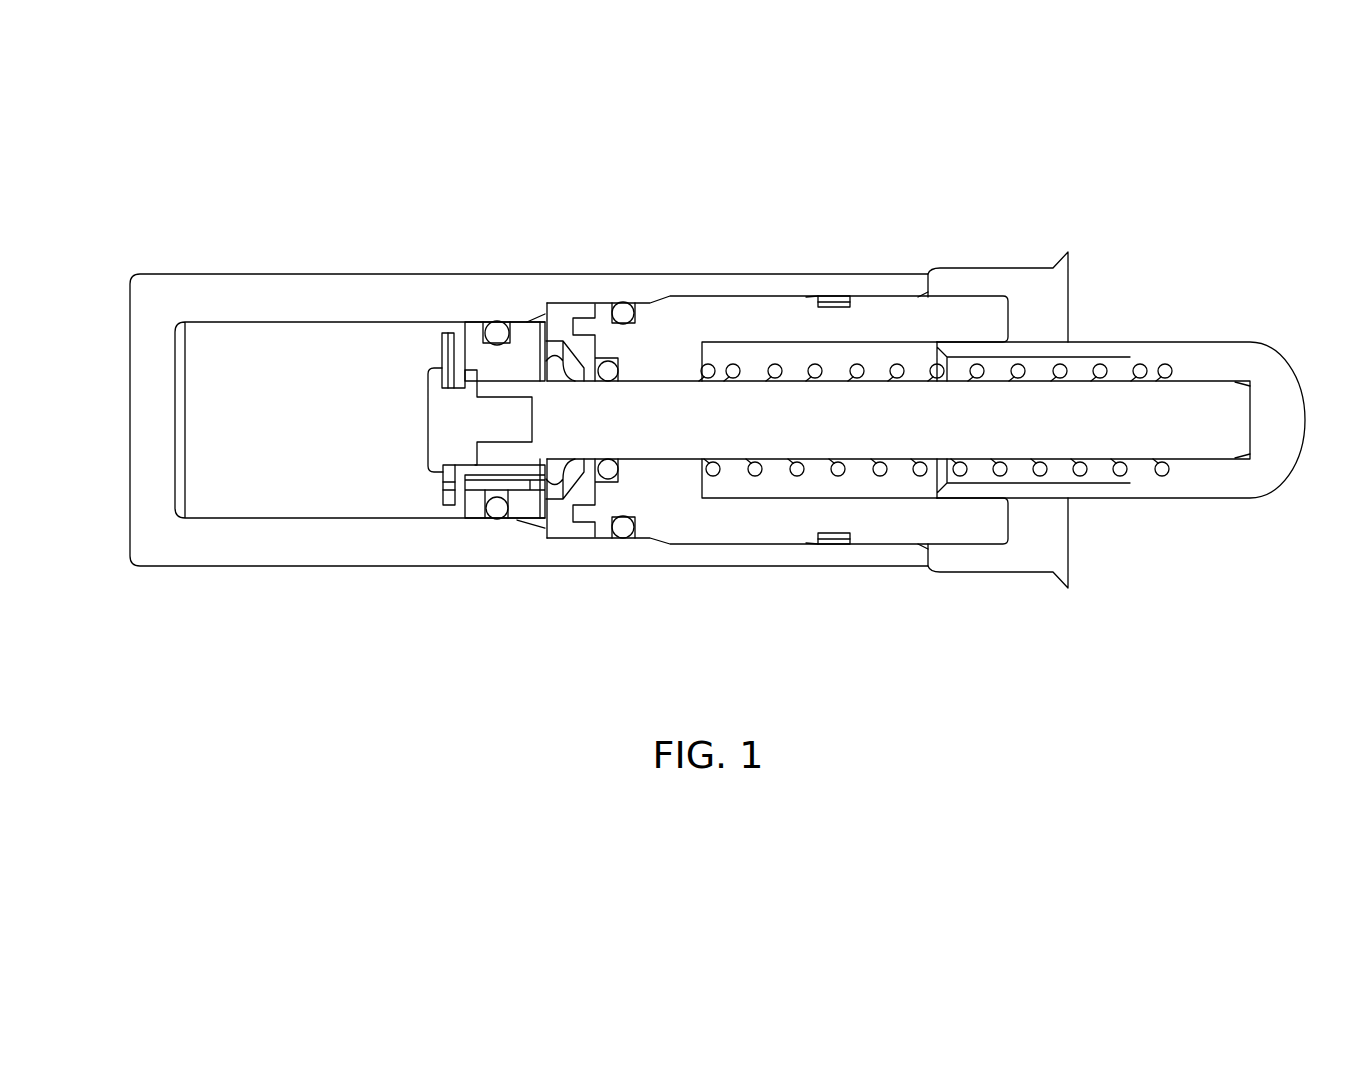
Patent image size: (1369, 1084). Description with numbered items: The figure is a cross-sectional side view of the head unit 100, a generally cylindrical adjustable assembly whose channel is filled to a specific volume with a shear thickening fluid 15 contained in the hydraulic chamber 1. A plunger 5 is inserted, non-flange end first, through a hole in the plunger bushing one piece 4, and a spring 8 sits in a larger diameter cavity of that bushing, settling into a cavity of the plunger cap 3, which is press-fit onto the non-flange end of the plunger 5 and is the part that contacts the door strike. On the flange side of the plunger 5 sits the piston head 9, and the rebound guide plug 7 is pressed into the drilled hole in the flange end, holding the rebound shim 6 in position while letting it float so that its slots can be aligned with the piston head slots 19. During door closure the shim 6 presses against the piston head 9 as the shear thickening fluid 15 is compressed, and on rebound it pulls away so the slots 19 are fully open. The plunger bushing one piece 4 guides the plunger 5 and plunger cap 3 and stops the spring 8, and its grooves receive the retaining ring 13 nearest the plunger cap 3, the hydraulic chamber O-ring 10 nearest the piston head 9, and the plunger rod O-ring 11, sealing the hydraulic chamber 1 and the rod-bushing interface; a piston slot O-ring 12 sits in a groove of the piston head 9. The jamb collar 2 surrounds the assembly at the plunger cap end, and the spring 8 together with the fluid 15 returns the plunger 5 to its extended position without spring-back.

The head unit 100 is at (130, 412).
The hydraulic chamber 1 is at (197, 550).
The jamb collar 2 is at (1057, 535).
The plunger cap 3 is at (1285, 415).
The plunger bushing one piece 4 is at (672, 302).
The shear thickening fluid plunger 5 is at (676, 407).
The rebound shim 6 is at (447, 358).
The rebound guide plug 7 is at (438, 447).
The spring 8 is at (1166, 367).
The shear thickening fluid piston head 9 is at (479, 335).
The hydraulic chamber O-ring 10 is at (622, 310).
The plunger rod O-ring 11 is at (606, 467).
The piston slot O-ring 12 is at (497, 330).
The retaining ring 13 is at (834, 296).
The shear thickening fluid 15 is at (246, 345).
The piston head slots 19 is at (485, 492).